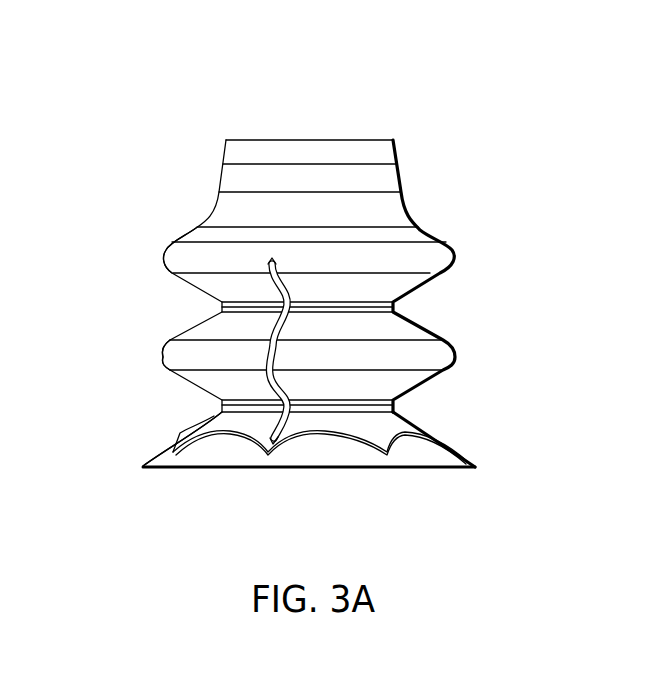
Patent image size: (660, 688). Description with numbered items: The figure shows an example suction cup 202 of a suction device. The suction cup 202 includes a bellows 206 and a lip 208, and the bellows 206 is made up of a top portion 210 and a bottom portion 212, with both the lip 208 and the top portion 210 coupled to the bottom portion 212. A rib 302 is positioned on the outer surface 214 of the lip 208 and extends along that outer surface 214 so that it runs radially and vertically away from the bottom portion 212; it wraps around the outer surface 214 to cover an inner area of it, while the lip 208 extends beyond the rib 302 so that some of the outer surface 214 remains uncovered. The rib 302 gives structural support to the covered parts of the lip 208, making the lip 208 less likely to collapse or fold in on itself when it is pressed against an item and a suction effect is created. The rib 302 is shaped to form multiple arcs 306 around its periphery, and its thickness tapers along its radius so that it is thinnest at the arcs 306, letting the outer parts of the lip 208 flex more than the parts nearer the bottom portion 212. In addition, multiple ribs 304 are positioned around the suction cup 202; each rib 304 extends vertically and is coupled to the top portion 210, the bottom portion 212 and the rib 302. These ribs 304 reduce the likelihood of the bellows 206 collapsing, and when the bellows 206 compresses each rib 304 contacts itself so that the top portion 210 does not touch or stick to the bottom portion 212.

The suction cup 202 is at (322, 71).
The bellows 206 is at (460, 254).
The lip 208 is at (478, 465).
The top portion 210 is at (163, 257).
The bottom portion 212 is at (163, 357).
The outer surface 214 is at (143, 466).
The rib 302 is at (400, 417).
The ribs 304 is at (286, 322).
The arcs 306 is at (227, 434).